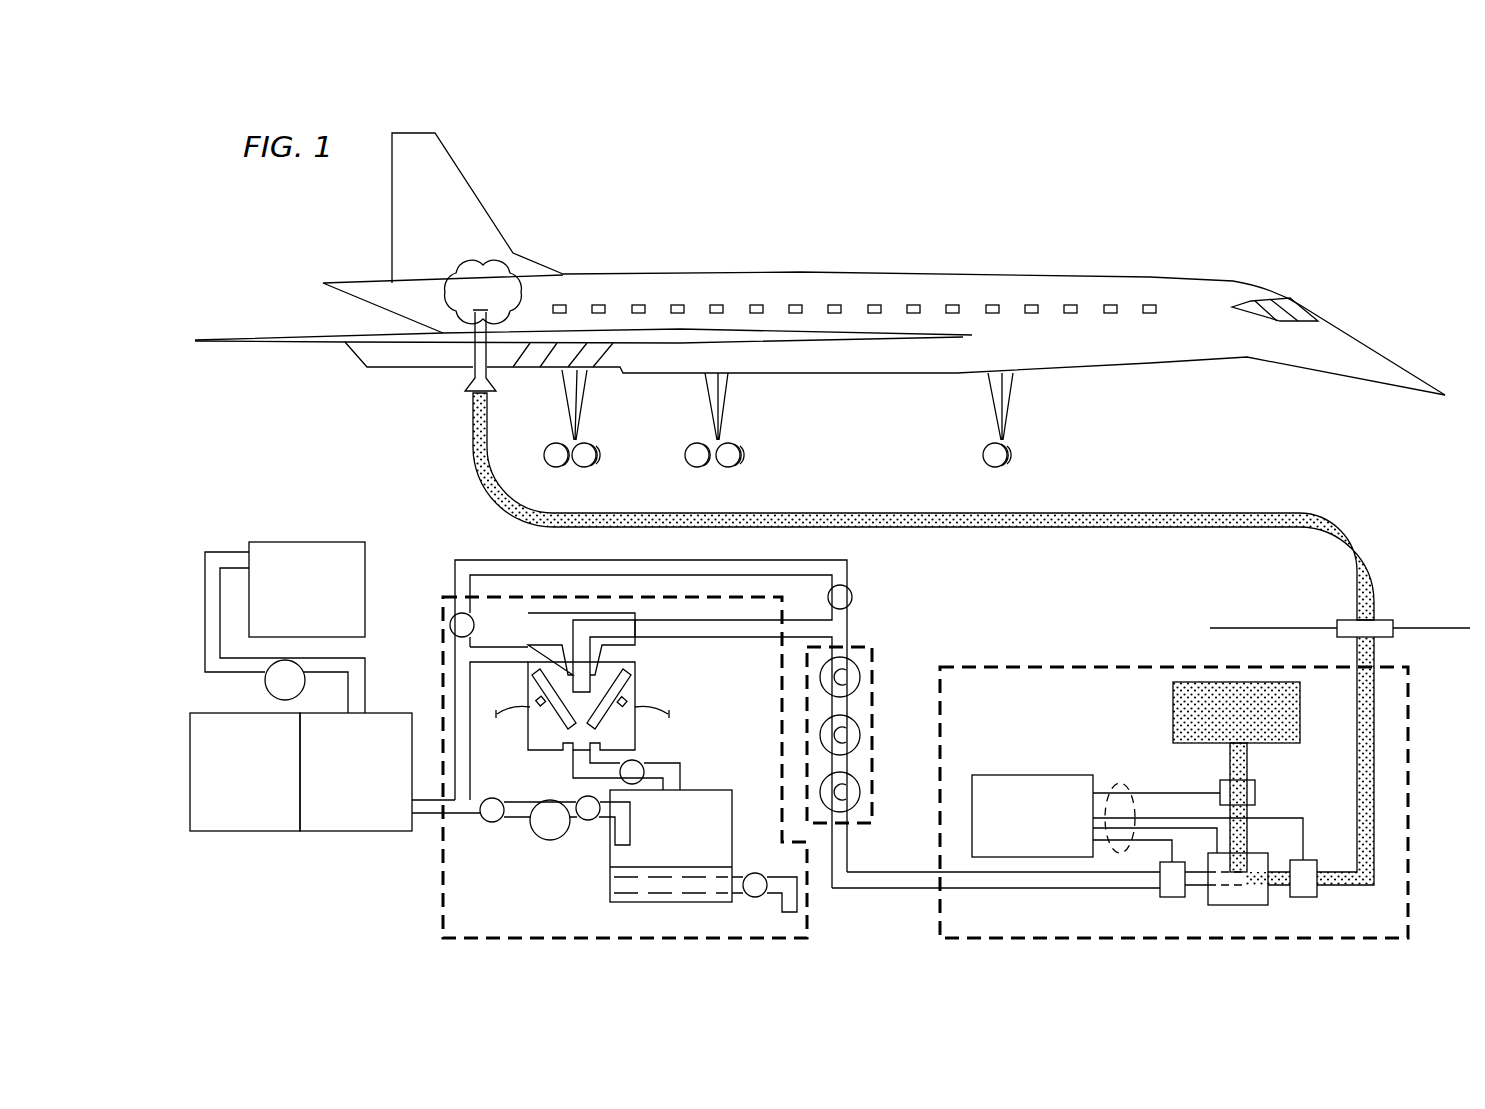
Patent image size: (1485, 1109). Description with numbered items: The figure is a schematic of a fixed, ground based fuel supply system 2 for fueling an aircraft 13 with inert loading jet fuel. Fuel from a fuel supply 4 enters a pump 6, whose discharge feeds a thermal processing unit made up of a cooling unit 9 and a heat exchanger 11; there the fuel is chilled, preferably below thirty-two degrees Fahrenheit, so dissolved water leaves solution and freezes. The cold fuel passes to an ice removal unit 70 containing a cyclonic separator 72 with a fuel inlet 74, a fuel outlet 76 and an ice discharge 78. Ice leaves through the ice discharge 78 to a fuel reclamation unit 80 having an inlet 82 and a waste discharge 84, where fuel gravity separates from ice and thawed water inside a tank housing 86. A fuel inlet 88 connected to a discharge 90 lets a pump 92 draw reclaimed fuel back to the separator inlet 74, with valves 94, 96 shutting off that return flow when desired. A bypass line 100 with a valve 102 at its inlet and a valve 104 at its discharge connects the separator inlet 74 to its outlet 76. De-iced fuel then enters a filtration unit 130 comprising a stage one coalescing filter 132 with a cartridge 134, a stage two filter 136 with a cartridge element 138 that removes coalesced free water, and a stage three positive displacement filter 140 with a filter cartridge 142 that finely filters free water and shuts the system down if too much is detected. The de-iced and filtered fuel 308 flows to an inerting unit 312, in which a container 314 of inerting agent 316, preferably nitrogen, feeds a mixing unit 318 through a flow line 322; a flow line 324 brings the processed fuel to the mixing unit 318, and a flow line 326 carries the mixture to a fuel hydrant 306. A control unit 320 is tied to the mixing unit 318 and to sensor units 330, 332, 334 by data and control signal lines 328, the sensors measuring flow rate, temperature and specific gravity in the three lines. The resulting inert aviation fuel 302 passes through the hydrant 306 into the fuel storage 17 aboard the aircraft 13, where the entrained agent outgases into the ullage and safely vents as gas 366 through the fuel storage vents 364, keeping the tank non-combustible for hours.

The fuel supply system 2 is at (335, 715).
The fuel supply 4 is at (324, 545).
The pump 6 is at (268, 688).
The cooling unit 9 is at (250, 823).
The heat exchanger 11 is at (338, 823).
The aircraft 13 is at (820, 300).
The fuel storage 17 is at (744, 340).
The ice removal unit 70 is at (442, 588).
The cyclonic separator 72 is at (528, 641).
The fuel inlet 74 is at (527, 664).
The fuel outlet 76 is at (643, 633).
The ice discharge 78 is at (573, 758).
The fuel reclamation unit 80 is at (663, 824).
The inlet 82 is at (646, 824).
The waste discharge 84 is at (795, 875).
The tank housing 86 is at (610, 879).
The fuel inlet 88 is at (635, 836).
The discharge 90 is at (607, 817).
The pump 92 is at (547, 841).
The valve 94 is at (583, 797).
The valve 96 is at (488, 822).
The bypass line 100 is at (510, 566).
The valve 102 is at (448, 633).
The valve 104 is at (852, 598).
The filtration unit 130 is at (882, 635).
The stage one coalescing filter 132 is at (869, 673).
The cartridge 134 is at (854, 672).
The stage two filter 136 is at (869, 735).
The cartridge element 138 is at (854, 731).
The stage three positive displacement filter 140 is at (869, 796).
The filter cartridge 142 is at (854, 786).
The inert aviation fuel 302 is at (971, 527).
The fuel hydrant 306 is at (1343, 621).
The deiced and filtered fuel 308 is at (996, 880).
The inerting unit 312 is at (1422, 761).
The container 314 is at (1224, 727).
The inerting agent 316 is at (1296, 721).
The mixing unit 318 is at (1208, 905).
The control unit 320 is at (1032, 816).
The flow line 322 is at (1230, 771).
The flow line 324 is at (930, 887).
The flow line 326 is at (1357, 816).
The data and control signal lines 328 is at (1120, 783).
The sensor unit 330 is at (1255, 791).
The sensor unit 332 is at (1160, 897).
The sensor unit 334 is at (1311, 894).
The fuel storage vents 364 is at (457, 309).
The gas 366 is at (497, 268).